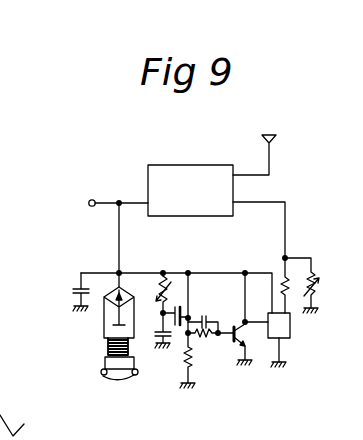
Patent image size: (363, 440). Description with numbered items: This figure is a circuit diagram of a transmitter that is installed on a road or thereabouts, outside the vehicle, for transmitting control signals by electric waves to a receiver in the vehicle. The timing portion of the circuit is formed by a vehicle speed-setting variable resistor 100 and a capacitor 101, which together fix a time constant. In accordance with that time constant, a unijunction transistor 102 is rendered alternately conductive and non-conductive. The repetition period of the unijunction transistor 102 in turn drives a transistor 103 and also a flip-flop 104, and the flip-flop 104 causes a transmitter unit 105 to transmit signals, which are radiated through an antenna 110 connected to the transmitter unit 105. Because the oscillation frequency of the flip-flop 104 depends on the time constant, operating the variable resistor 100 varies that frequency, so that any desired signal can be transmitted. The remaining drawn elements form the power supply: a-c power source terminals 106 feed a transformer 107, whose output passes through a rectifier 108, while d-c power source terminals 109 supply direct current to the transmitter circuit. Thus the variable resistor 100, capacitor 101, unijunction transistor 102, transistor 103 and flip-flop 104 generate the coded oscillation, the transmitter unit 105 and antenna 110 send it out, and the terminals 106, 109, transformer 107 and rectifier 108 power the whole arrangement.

The vehicle speed-setting variable resistor 100 is at (165, 290).
The capacitor 101 is at (157, 343).
The unijunction transistor 102 is at (183, 313).
The transistor 103 is at (242, 347).
The flip-flop 104 is at (290, 332).
The transmitter unit 105 is at (183, 166).
The a-c power source terminals 106 is at (118, 378).
The transformer 107 is at (108, 348).
The rectifier 108 is at (90, 286).
The d-c power source terminals 109 is at (92, 200).
The antenna 110 is at (269, 135).